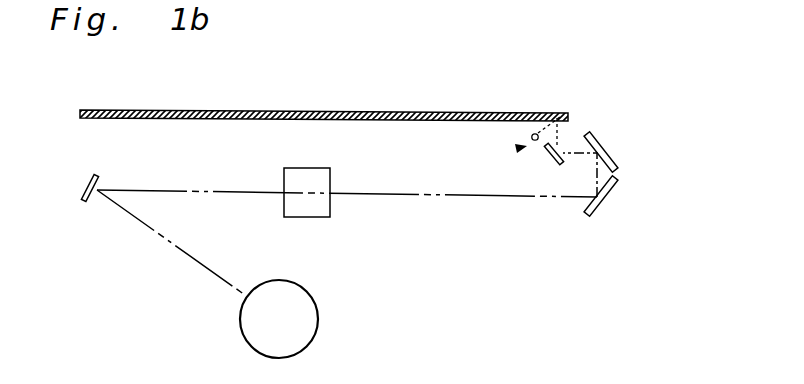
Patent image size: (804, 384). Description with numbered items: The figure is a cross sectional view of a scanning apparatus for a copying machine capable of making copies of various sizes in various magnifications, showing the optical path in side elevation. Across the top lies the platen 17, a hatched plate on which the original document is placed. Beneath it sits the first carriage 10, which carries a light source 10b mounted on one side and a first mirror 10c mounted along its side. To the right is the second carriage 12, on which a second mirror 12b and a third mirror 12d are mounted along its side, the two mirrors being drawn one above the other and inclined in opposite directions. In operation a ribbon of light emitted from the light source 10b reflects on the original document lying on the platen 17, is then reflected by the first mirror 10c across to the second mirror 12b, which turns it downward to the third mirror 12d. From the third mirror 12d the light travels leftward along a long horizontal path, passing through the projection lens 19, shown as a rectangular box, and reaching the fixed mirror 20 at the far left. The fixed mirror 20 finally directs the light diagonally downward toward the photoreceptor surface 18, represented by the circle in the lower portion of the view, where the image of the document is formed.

The first carriage 10 is at (518, 148).
The light source 10b is at (531, 141).
The first mirror 10c is at (550, 155).
The second carriage 12 is at (637, 170).
The second mirror 12b is at (600, 140).
The third mirror 12d is at (603, 203).
The platen 17 is at (336, 112).
The photoreceptor surface 18 is at (292, 338).
The projection lens 19 is at (315, 208).
The fixed mirror 20 is at (85, 188).